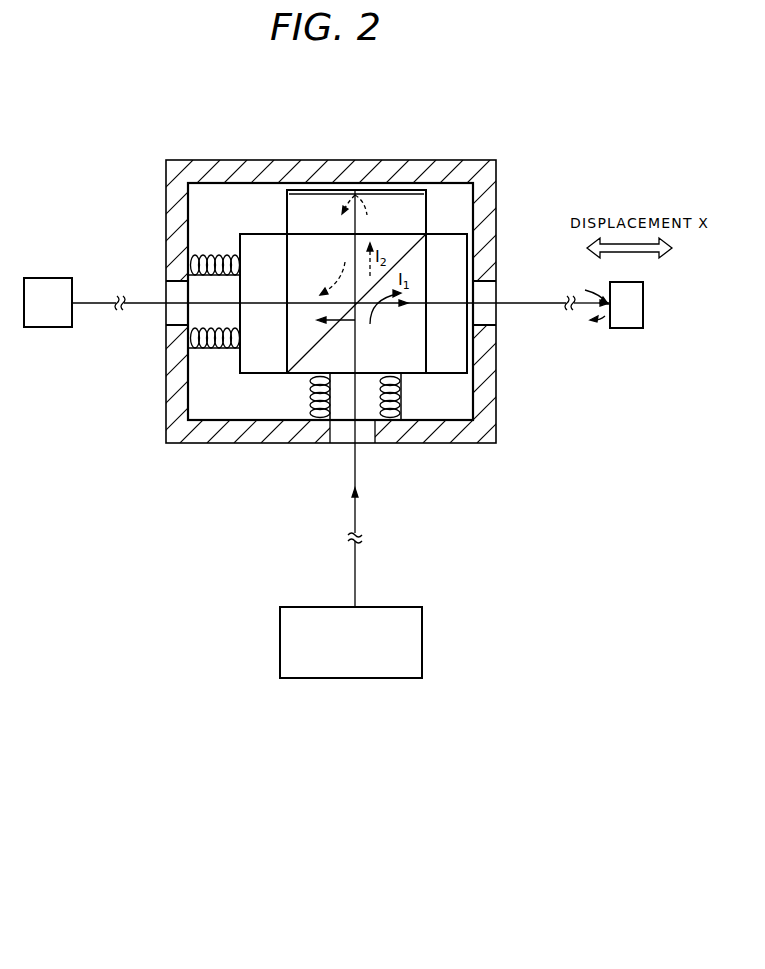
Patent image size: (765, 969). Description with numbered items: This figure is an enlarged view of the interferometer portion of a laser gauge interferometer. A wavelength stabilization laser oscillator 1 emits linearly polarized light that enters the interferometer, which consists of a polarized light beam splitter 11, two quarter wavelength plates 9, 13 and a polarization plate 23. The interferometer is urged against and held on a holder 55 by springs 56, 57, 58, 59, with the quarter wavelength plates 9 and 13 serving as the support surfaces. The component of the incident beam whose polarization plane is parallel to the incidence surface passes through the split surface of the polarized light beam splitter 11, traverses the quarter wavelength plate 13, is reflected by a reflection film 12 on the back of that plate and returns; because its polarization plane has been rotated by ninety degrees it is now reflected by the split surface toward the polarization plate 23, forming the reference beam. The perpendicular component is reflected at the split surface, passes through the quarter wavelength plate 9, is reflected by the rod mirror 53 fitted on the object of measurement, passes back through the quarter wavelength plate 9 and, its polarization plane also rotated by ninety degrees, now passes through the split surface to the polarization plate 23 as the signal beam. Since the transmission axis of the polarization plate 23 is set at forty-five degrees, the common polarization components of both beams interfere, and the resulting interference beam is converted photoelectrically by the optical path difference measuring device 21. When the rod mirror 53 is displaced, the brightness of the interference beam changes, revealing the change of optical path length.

The wavelength stabilization laser oscillator 1 is at (422, 637).
The quarter wavelength plate 9 is at (453, 248).
The polarized light beam splitter 11 is at (412, 355).
The reflection film 12 is at (285, 190).
The quarter wavelength plate 13 is at (298, 218).
The optical path difference measuring device 21 is at (55, 278).
The polarization plate 23 is at (255, 365).
The rod mirror 53 is at (632, 330).
The holder 55 is at (188, 165).
The spring 56 is at (198, 258).
The spring 57 is at (198, 345).
The spring 58 is at (310, 407).
The spring 59 is at (410, 405).